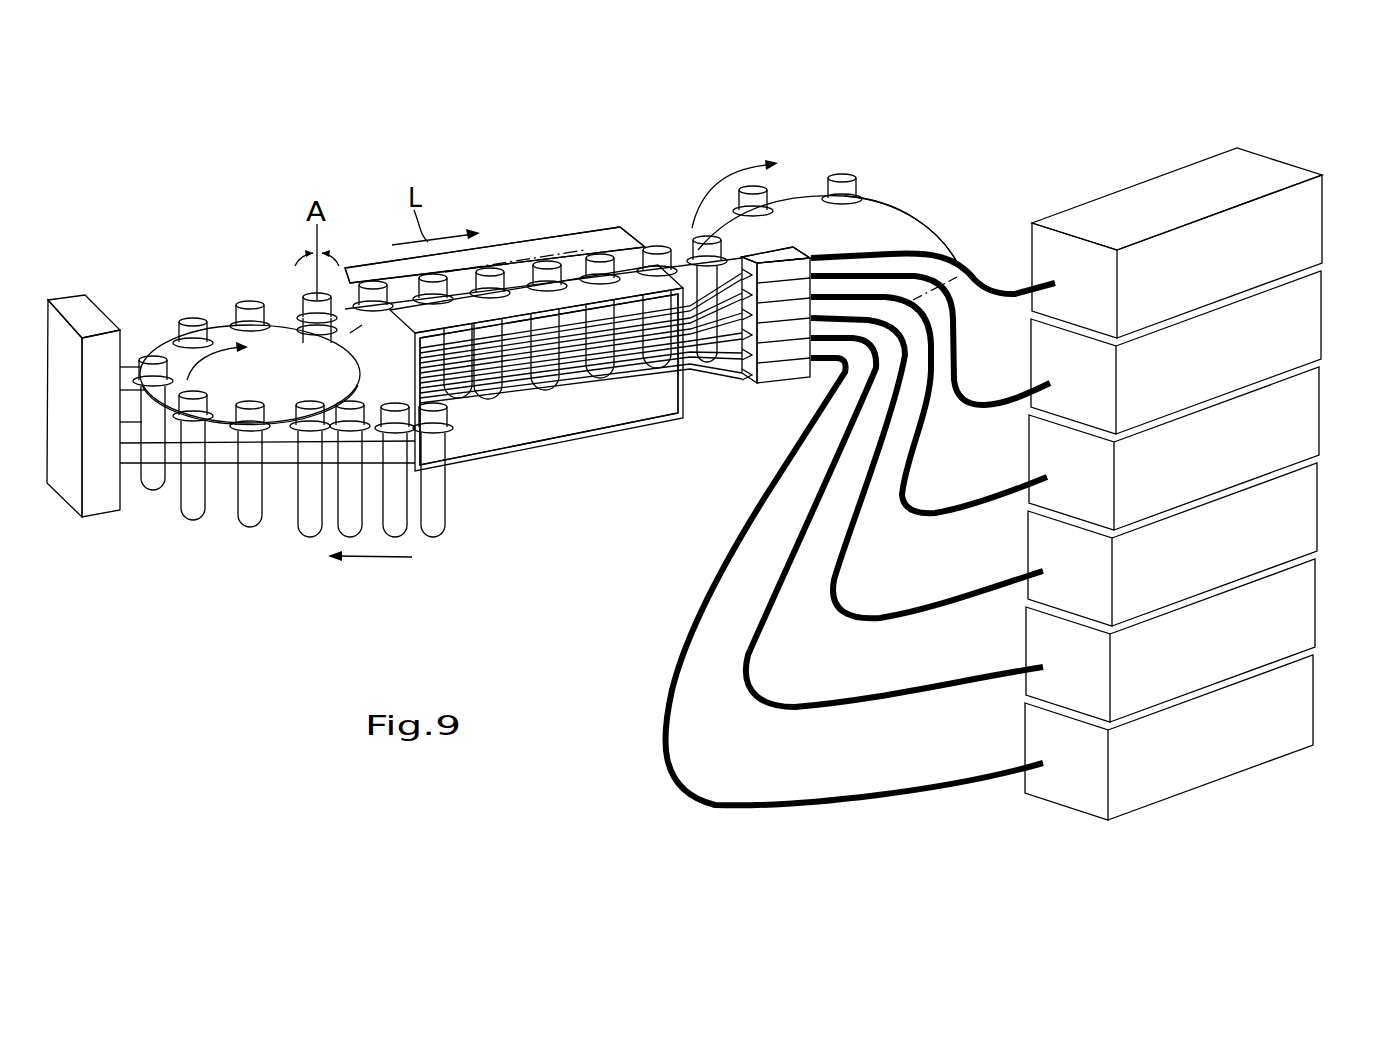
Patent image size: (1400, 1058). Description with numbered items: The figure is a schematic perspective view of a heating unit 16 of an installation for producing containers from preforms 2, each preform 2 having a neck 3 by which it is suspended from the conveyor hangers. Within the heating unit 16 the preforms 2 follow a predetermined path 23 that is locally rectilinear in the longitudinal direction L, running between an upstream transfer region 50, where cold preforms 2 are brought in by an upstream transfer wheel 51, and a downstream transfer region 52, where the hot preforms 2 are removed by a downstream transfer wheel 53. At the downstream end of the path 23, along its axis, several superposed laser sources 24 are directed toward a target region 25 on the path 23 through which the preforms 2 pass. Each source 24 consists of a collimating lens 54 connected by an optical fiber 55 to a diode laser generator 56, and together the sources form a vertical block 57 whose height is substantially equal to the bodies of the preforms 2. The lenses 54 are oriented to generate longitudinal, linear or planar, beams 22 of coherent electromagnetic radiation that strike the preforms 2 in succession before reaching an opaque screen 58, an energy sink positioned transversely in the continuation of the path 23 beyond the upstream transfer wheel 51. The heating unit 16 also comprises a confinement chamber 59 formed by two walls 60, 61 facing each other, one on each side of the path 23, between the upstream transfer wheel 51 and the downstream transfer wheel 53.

The preform 2 is at (297, 533).
The neck 3 is at (242, 316).
The heating unit 16 is at (241, 212).
The beam of coherent electromagnetic radiation 22 is at (140, 352).
The path 23 is at (517, 260).
The source of coherent electromagnetic radiation 24 is at (747, 374).
The target region 25 is at (513, 418).
The upstream transfer region 50 is at (166, 300).
The upstream transfer wheel 51 is at (281, 430).
The downstream transfer region 52 is at (884, 192).
The downstream transfer wheel 53 is at (924, 230).
The collimating lens 54 is at (780, 396).
The optical fiber 55 is at (998, 292).
The diode laser generator 56 is at (1170, 185).
The vertical block 57 is at (784, 240).
The opaque screen 58 is at (82, 297).
The confinement chamber 59 is at (534, 226).
The wall 60 is at (581, 442).
The wall 61 is at (636, 375).